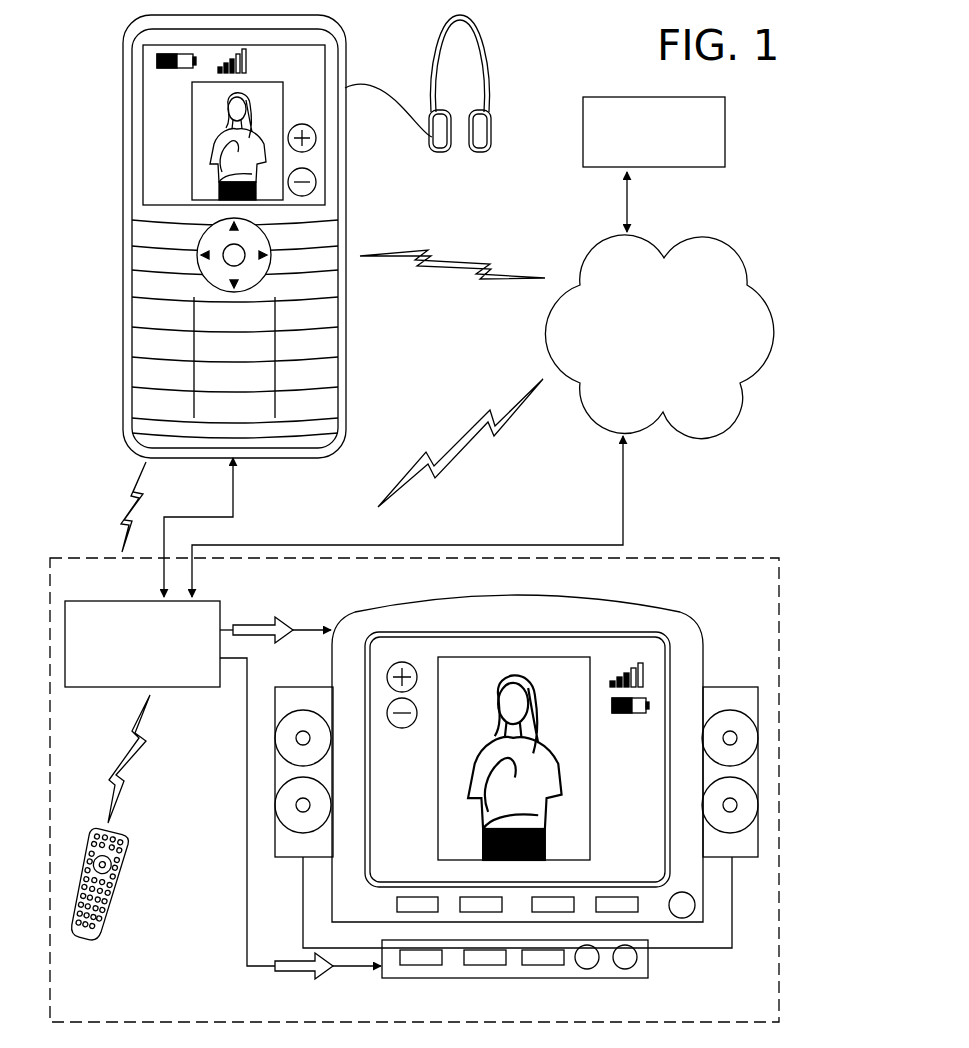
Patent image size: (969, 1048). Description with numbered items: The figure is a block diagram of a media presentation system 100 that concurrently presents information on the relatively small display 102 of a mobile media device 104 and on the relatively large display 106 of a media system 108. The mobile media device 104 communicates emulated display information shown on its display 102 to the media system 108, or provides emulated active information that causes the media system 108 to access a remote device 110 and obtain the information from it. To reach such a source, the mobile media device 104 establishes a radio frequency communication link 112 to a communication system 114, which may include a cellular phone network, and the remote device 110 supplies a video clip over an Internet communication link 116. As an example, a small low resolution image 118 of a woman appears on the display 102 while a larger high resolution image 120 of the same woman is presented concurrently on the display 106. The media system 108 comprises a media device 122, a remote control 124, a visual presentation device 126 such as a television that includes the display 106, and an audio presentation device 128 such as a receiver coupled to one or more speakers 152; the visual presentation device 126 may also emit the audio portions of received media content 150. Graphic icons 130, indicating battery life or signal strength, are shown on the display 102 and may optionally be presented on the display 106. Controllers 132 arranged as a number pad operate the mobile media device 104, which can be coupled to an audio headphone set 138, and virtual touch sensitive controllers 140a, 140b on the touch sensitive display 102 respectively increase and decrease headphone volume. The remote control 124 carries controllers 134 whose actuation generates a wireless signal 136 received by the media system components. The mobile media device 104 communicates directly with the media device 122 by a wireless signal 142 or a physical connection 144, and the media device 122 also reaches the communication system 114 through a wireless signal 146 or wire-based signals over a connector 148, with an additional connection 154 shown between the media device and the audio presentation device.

The media presentation system 100 is at (537, 50).
The display 102 is at (177, 198).
The mobile media device 104 is at (346, 62).
The display 106 is at (641, 869).
The media system 108 is at (768, 1014).
The remote device 110 is at (711, 156).
The radio frequency (RF) communication link 112 is at (443, 288).
The communication system 114 is at (676, 386).
The Internet communication link 116 is at (615, 209).
The low resolution image 118 is at (205, 97).
The high resolution image 120 is at (425, 798).
The media device 122 is at (192, 672).
The remote control 124 is at (125, 899).
The visual presentation device 126 is at (684, 624).
The audio presentation device 128 is at (648, 967).
The graphic icons 130 is at (266, 63).
The controllers 132 is at (105, 379).
The controllers 134 is at (147, 948).
The wireless signal 136 is at (110, 765).
The audio headphone set 138 is at (456, 157).
The virtual touch sensitive controller 140a is at (316, 139).
The virtual touch sensitive controller 140b is at (316, 182).
The wireless signal 142 is at (110, 515).
The physical connection 144 is at (233, 497).
The wireless signal 146 is at (470, 458).
The connector 148 is at (623, 507).
The media content 150 is at (250, 622).
The speakers 152 is at (728, 688).
The audio output connection 154 is at (283, 972).